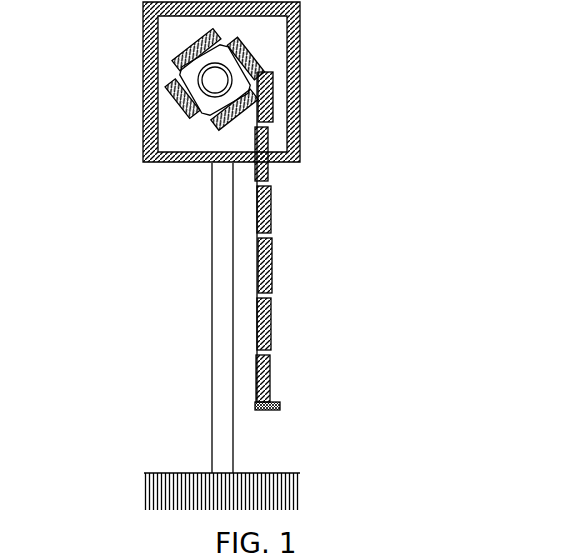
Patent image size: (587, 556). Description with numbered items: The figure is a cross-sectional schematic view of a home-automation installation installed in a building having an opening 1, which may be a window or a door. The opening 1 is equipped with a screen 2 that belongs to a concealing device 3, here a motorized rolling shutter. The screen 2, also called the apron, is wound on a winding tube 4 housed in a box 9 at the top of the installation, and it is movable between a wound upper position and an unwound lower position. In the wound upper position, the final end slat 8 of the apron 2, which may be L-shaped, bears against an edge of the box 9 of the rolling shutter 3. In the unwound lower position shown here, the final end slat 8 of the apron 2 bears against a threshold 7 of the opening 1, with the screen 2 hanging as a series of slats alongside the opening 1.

The opening 1 is at (200, 327).
The screen 2 is at (271, 209).
The concealing device 3 is at (261, 272).
The winding tube 4 is at (195, 89).
The threshold 7 is at (185, 470).
The final end slat 8 is at (298, 387).
The box 9 is at (143, 40).